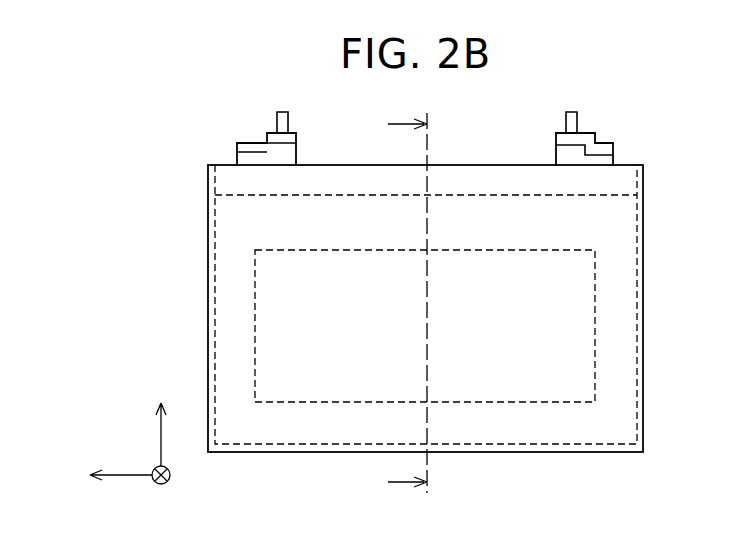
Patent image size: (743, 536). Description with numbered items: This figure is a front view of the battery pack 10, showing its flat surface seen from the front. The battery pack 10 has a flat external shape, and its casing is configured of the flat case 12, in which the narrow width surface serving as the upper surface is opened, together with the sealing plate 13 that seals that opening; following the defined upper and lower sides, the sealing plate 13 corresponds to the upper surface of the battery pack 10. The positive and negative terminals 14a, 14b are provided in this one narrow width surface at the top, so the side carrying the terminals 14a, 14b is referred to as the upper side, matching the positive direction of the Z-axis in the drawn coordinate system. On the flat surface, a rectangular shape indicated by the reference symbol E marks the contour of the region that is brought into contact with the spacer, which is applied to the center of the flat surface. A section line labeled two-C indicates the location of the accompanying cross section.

The battery pack 10 is at (193, 162).
The flat case 12 is at (638, 313).
The sealing plate 13 is at (491, 182).
The positive terminal 14a is at (265, 133).
The negative terminal 14b is at (585, 133).
The contour of contact region E is at (596, 366).